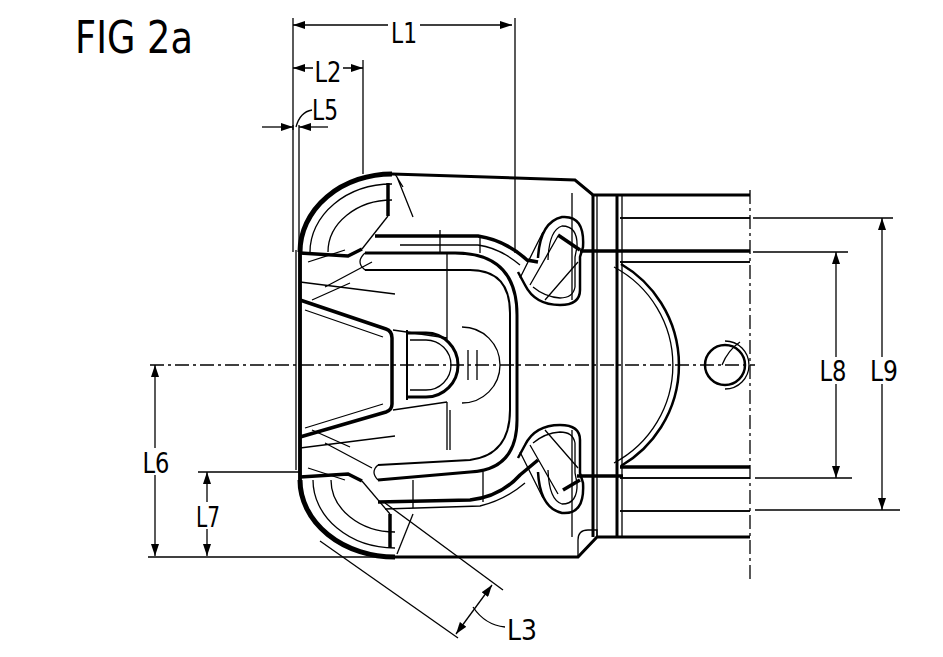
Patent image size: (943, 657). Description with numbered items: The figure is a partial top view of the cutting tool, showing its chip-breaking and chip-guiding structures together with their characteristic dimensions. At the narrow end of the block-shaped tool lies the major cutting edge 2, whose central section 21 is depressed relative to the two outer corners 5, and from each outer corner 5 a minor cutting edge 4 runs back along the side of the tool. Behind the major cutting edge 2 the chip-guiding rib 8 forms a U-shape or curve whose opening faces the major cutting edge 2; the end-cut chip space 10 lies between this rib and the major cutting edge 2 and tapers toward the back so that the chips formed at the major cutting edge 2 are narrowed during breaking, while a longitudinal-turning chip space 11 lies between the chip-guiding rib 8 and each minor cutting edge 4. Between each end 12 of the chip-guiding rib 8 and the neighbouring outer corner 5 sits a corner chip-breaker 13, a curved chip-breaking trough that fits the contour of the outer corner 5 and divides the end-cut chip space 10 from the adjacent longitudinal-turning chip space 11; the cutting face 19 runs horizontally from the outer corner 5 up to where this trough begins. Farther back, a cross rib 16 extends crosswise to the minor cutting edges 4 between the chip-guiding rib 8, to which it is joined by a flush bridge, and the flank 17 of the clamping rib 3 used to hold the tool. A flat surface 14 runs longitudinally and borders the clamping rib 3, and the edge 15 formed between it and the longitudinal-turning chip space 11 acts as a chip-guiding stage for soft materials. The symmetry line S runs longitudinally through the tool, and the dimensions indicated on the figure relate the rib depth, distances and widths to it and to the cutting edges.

The major cutting edge 2 is at (300, 325).
The central section 21 is at (268, 366).
The clamping rib 3 is at (706, 262).
The minor cutting edge 4 is at (478, 177).
The outer corner 5 is at (337, 216).
The chip-guiding rib 8 is at (436, 197).
The end-cut chip space 10 is at (367, 373).
The longitudinal-turning chip space 11 is at (545, 197).
The end of the chip-guiding rib 12 is at (303, 262).
The corner chip-breaker 13 is at (352, 200).
The flat surface 14 is at (660, 222).
The edge 15 is at (573, 530).
The cross rib 16 is at (577, 200).
The flank 17 is at (667, 430).
The cutting face 19 is at (340, 386).
The symmetry line S is at (728, 352).